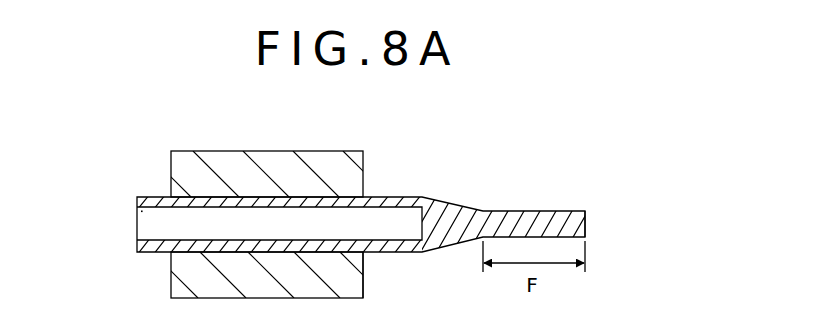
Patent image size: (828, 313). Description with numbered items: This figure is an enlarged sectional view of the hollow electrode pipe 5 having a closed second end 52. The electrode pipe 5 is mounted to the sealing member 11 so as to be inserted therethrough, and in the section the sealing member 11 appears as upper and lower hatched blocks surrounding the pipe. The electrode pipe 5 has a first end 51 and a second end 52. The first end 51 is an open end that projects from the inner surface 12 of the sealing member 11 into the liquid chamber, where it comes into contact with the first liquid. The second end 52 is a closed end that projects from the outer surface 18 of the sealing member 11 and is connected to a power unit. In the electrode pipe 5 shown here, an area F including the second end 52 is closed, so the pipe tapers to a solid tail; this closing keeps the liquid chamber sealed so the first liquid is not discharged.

The electrode pipe 5 is at (484, 202).
The sealing member 11 is at (325, 151).
The inner surface 12 is at (171, 279).
The outer surface 18 is at (364, 282).
The first end 51 is at (137, 202).
The closed second end 52 is at (587, 222).